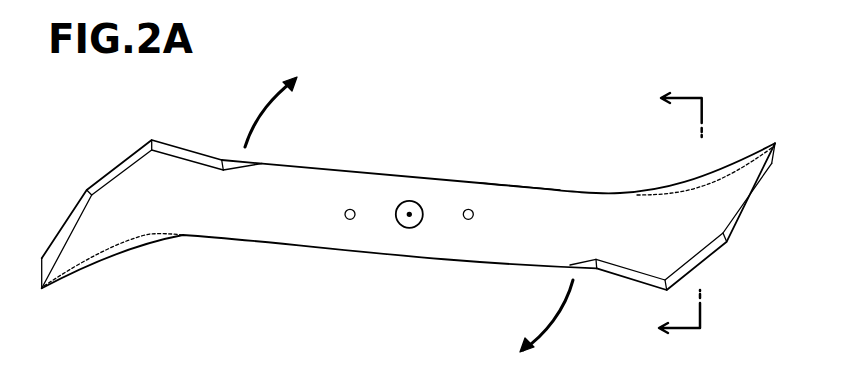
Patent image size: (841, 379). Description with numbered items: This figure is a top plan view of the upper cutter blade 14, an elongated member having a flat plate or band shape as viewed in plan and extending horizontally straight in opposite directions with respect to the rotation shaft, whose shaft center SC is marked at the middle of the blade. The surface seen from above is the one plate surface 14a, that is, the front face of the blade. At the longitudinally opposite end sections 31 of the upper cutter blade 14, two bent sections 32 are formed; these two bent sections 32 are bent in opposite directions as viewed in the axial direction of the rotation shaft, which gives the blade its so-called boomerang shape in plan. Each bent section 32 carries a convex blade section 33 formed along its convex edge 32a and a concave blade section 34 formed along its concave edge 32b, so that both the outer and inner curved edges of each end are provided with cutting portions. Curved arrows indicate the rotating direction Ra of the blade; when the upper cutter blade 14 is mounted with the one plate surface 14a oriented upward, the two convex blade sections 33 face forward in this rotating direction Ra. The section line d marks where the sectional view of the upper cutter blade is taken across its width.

The upper cutter blade 14 is at (422, 192).
The one plate surface 14a is at (518, 212).
The end section 31 is at (257, 207).
The bent section 32 is at (422, 221).
The convex edge 32a is at (129, 155).
The concave edge 32b is at (127, 252).
The convex blade section 33 is at (105, 178).
The concave blade section 34 is at (77, 267).
The shaft center SC is at (410, 213).
The rotating direction Ra is at (409, 219).
The line d- d is at (661, 213).